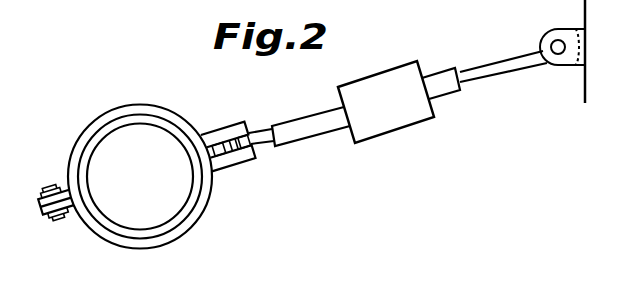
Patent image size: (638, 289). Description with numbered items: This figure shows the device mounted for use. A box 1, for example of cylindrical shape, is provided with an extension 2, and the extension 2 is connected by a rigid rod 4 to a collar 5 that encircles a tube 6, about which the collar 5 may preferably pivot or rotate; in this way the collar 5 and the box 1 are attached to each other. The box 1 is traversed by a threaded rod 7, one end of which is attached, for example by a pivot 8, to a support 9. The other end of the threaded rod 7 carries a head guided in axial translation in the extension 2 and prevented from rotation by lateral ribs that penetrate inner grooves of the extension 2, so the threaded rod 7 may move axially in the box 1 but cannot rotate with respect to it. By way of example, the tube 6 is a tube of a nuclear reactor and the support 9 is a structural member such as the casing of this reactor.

The box 1 is at (413, 112).
The extension 2 is at (317, 130).
The rigid rod 4 is at (252, 139).
The collar 5 is at (127, 105).
The tube 6 is at (95, 138).
The threaded rod 7 is at (494, 66).
The pivot 8 is at (558, 50).
The support 9 is at (584, 87).